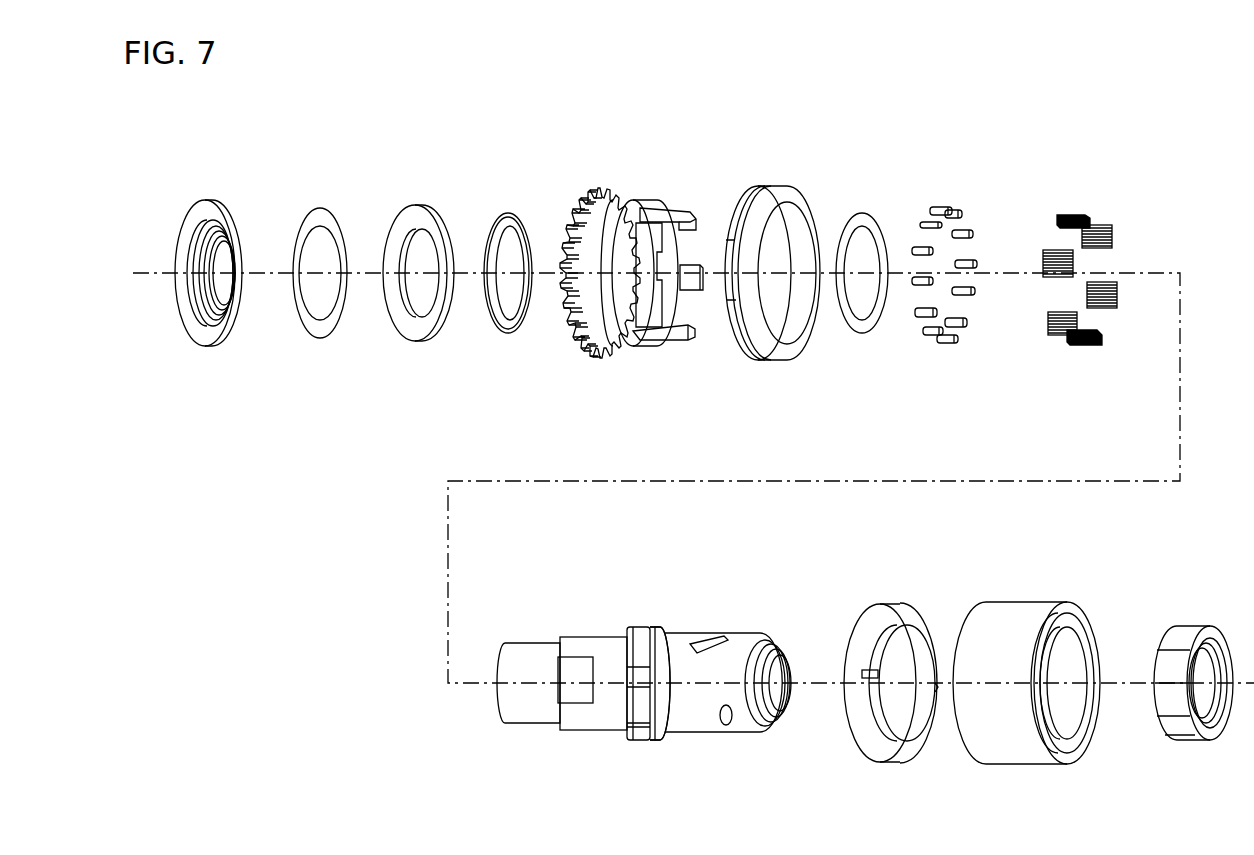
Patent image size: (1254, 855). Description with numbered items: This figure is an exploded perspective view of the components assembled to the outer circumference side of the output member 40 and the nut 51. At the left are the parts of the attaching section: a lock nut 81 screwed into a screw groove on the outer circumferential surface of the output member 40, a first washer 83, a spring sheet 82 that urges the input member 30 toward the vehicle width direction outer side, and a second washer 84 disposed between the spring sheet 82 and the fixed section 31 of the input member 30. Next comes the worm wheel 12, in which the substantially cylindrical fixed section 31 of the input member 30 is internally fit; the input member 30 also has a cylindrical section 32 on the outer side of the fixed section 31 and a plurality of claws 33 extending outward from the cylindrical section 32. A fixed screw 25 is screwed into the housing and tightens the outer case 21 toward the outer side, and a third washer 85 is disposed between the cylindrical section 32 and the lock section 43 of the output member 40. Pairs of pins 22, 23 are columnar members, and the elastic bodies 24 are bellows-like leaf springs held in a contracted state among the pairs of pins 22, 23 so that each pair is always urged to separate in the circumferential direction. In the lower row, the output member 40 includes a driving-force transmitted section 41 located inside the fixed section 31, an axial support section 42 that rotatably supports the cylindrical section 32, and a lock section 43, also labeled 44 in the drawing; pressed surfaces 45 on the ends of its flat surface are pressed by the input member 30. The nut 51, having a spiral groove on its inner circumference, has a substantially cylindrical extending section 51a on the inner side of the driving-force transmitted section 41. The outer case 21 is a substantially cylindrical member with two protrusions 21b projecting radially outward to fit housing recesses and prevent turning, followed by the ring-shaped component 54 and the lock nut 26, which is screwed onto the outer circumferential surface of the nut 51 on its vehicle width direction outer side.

The worm wheel 12 is at (600, 266).
The outer case 21 is at (881, 668).
The protrusions 21b is at (866, 675).
The pins 22 is at (940, 207).
The pins 23 is at (922, 222).
The elastic bodies 24 is at (1084, 210).
The fixed screw 25 is at (763, 191).
The lock nut 26 is at (1178, 629).
The input member 30 is at (660, 278).
The fixed section 31 is at (585, 322).
The cylindrical section 32 is at (642, 218).
The claws 33 is at (680, 338).
The output member 40 is at (627, 685).
The driving-force transmitted section 41 is at (582, 640).
The axial support section 42 is at (607, 660).
The lock section 43 is at (660, 683).
The collar flange 44 is at (650, 650).
The pressed surfaces 45 is at (562, 667).
The nut 51 is at (644, 685).
The extending section 51a is at (527, 706).
The bearing 54 is at (1033, 606).
The lock nut 81 is at (213, 210).
The spring sheet 82 is at (427, 214).
The first washer 83 is at (321, 212).
The second washer 84 is at (511, 219).
The third washer 85 is at (862, 216).